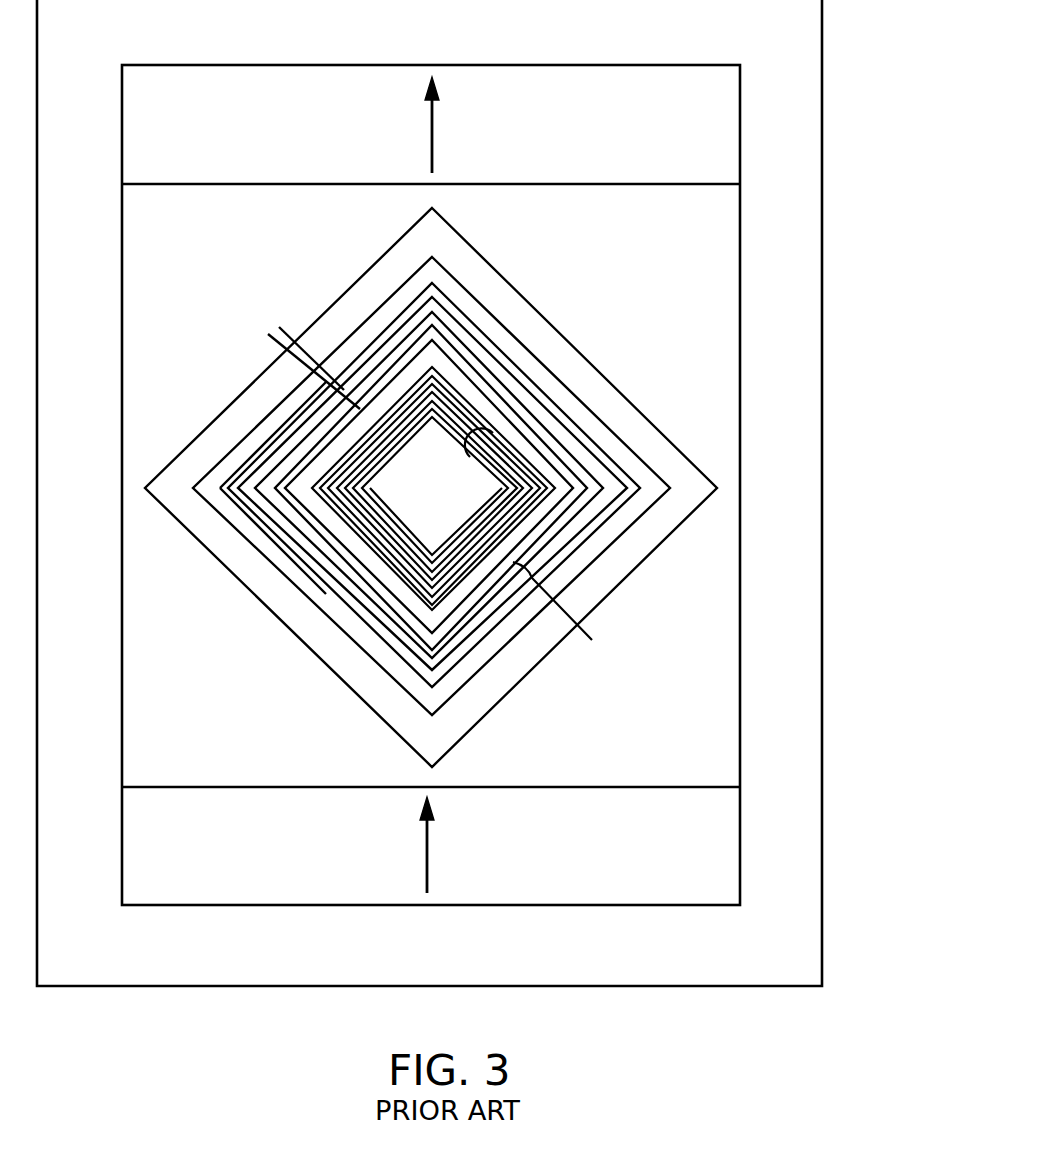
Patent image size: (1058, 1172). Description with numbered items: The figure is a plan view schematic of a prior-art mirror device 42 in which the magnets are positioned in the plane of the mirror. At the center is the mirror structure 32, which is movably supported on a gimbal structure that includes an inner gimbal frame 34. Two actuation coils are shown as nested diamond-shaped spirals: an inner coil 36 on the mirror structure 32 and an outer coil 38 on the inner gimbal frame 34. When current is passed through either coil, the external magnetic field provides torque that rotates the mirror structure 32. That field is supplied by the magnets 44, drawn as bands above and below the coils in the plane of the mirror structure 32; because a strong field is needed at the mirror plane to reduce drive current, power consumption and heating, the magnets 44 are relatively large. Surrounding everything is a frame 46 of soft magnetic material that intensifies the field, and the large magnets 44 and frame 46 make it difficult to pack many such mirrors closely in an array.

The mirror structure 32 is at (447, 494).
The inner gimbal frame 34 is at (548, 537).
The inner coil 36 is at (362, 520).
The outer coil 38 is at (510, 356).
The mirror device 42 is at (872, 221).
The magnets 44 is at (622, 87).
The frame 46 is at (815, 721).